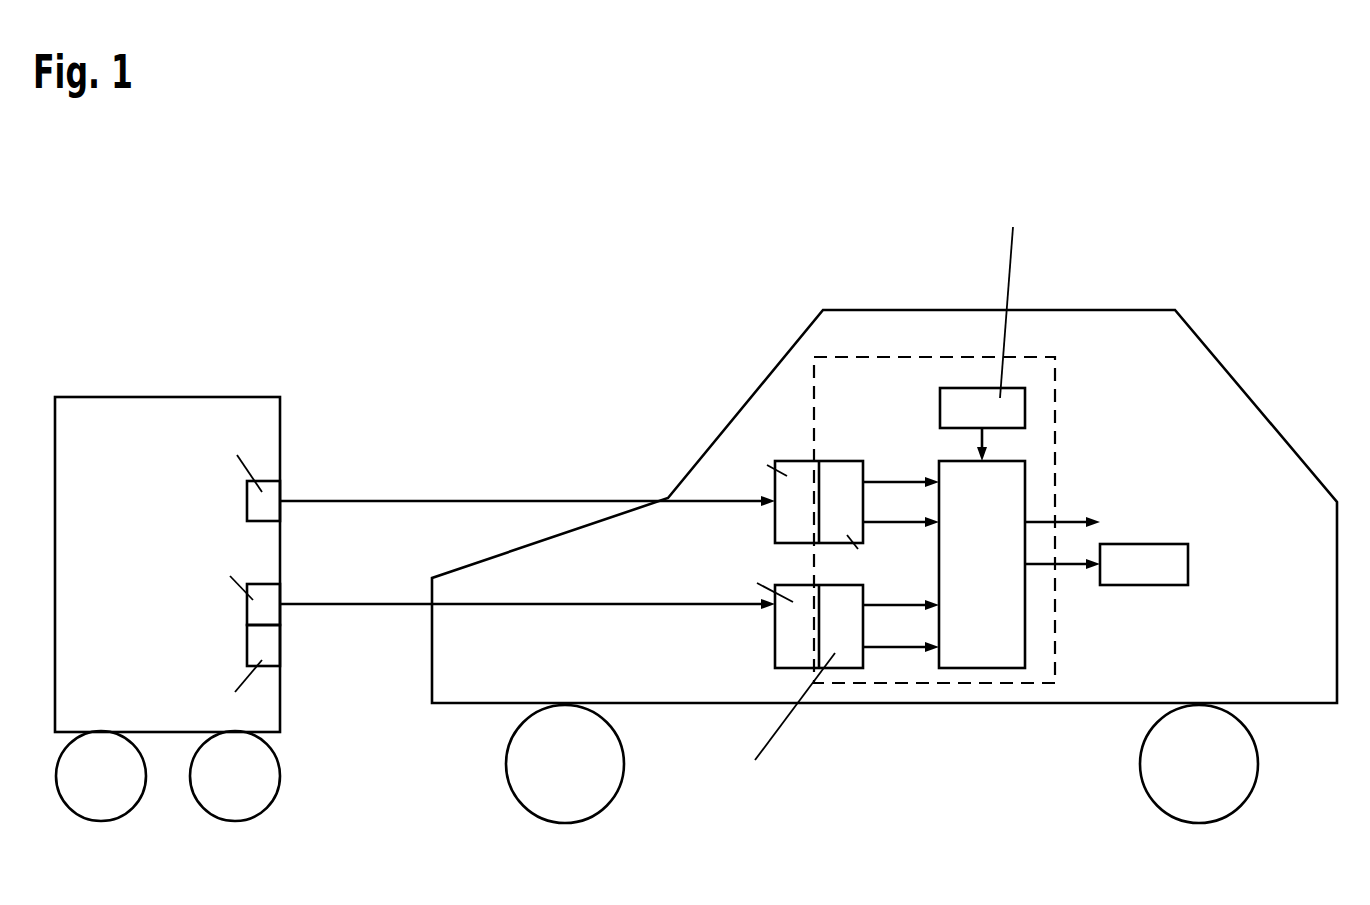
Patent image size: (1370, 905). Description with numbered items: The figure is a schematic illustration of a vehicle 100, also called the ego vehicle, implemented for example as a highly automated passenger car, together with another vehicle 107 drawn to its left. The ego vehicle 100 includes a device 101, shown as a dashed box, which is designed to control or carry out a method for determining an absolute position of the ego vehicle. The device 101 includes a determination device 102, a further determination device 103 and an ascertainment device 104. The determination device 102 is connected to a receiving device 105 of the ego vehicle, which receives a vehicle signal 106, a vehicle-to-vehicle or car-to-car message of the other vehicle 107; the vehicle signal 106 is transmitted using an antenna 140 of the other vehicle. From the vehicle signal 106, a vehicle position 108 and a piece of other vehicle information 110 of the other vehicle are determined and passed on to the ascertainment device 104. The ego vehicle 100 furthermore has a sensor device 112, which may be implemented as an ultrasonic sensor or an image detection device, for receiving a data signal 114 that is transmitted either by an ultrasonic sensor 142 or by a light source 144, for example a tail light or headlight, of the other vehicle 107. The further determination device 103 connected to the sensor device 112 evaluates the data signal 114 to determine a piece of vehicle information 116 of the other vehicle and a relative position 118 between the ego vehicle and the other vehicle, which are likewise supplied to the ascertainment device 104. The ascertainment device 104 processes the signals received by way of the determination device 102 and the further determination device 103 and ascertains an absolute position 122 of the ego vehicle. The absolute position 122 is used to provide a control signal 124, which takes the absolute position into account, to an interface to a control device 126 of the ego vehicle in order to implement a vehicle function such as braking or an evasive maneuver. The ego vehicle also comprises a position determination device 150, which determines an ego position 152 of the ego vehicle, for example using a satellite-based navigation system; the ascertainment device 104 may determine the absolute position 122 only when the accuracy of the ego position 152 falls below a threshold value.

The vehicle 100 is at (1222, 259).
The device 101 is at (988, 357).
The determination device 102 is at (835, 461).
The further determination device 103 is at (838, 668).
The ascertainment device 104 is at (985, 668).
The receiving device 105 is at (775, 482).
The vehicle signal 106 is at (335, 501).
The other vehicle 107 is at (101, 322).
The vehicle position 108 is at (883, 482).
The piece of other vehicle information 110 is at (913, 522).
The sensor device 112 is at (775, 645).
The data signal 114 is at (335, 604).
The piece of vehicle information 116 is at (882, 605).
The relative position 118 is at (908, 647).
The absolute position 122 is at (1068, 522).
The control signal 124 is at (1068, 564).
The control device 126 is at (1145, 544).
The antenna 140 is at (247, 503).
The ultrasonic sensor 142 is at (247, 606).
The light source 144 is at (247, 647).
The position determination device 150 is at (958, 388).
The ego position 152 is at (982, 436).